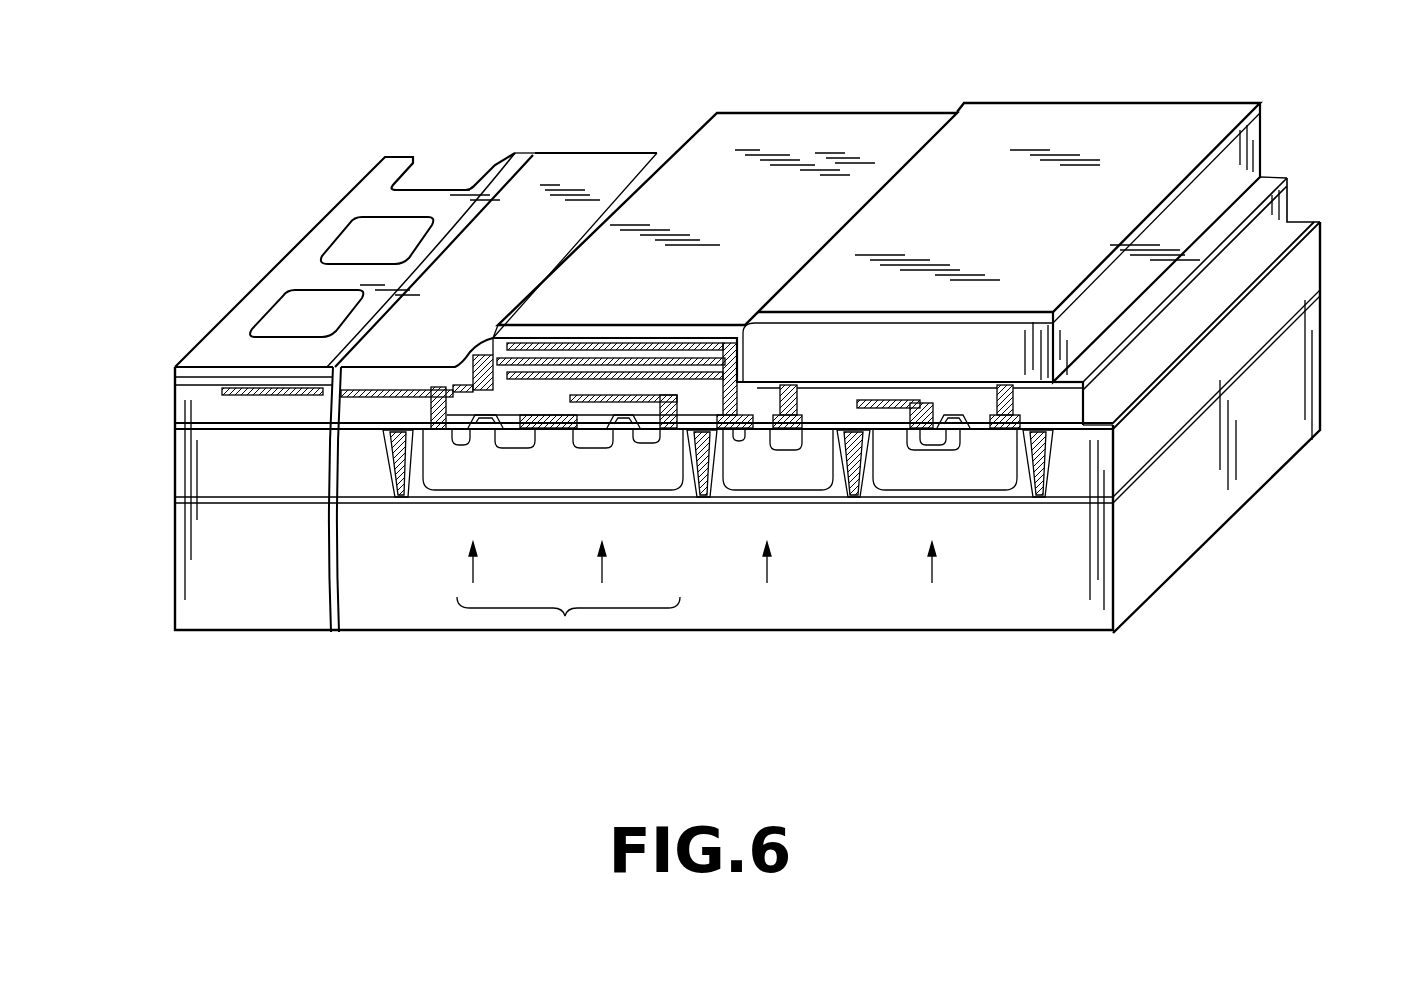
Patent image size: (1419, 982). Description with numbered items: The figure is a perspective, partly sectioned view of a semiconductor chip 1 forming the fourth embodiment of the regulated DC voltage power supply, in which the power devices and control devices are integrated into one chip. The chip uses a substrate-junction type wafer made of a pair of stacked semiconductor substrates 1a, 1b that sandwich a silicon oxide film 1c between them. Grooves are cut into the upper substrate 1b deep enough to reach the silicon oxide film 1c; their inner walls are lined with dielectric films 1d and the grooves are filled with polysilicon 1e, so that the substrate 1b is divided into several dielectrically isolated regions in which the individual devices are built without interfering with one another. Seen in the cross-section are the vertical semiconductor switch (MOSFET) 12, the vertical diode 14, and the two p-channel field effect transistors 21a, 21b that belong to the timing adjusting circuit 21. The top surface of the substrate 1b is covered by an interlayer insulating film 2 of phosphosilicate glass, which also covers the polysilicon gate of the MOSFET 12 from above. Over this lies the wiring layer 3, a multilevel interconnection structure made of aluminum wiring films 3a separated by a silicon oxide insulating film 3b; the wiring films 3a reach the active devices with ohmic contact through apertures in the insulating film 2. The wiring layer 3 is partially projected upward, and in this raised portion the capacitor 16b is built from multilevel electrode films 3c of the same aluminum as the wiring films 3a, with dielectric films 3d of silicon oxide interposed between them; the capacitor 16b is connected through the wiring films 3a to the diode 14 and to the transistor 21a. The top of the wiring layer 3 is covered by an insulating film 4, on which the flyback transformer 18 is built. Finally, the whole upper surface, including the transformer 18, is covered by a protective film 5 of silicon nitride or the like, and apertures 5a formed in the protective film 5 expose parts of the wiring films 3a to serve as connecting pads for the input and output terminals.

The semiconductor chip 1 is at (624, 633).
The semiconductor substrate 1a is at (198, 577).
The semiconductor substrate 1b is at (190, 470).
The silicon oxide film 1c is at (173, 502).
The dielectric film 1d is at (385, 478).
The polysilicon 1e is at (395, 493).
The interlayer insulating film 2 is at (1322, 222).
The wiring layer 3 is at (1290, 203).
The wiring films 3a is at (233, 387).
The insulating film 3b is at (197, 400).
The electrode films 3c is at (578, 365).
The dielectric films 3d is at (687, 375).
The insulating film 4 is at (1287, 180).
The protective film 5 is at (270, 285).
The apertures 5a is at (405, 172).
The semiconductor switch (MOSFET) 12 is at (950, 591).
The diode 14 is at (785, 591).
The capacitor 16b is at (727, 211).
The flyback transformer 18 is at (1257, 175).
The timing adjusting circuit 21 is at (563, 617).
The p-channel field effect transistor 21a is at (490, 591).
The p-channel field effect transistor 21b is at (670, 591).